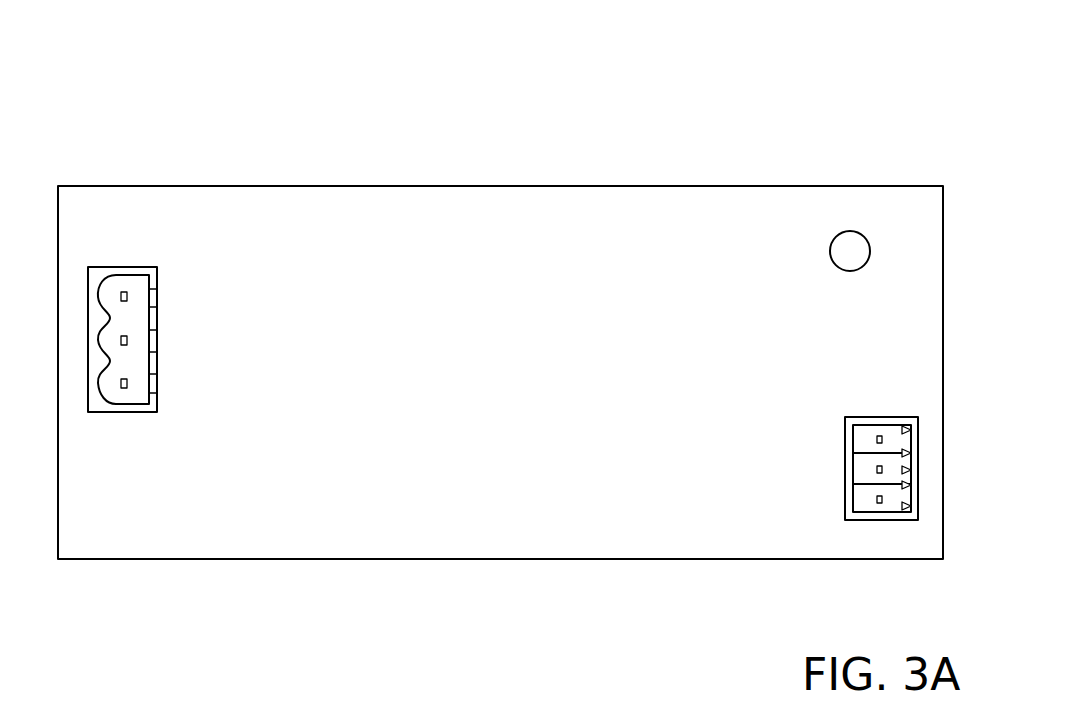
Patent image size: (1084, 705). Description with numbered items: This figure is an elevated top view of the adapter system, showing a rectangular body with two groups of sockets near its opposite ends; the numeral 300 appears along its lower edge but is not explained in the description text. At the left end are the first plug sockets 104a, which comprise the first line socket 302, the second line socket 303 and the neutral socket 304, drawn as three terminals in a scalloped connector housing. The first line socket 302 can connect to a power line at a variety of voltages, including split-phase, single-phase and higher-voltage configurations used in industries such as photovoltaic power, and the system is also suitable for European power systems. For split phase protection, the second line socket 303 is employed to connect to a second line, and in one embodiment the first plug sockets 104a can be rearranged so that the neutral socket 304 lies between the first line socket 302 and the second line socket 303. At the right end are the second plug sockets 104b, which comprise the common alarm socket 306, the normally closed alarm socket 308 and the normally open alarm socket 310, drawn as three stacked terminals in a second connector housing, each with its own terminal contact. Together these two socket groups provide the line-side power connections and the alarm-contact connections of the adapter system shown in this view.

The circuit board 300 is at (500, 445).
The first plug sockets 104a is at (90, 268).
The second plug sockets 104b is at (918, 413).
The first line socket 302 is at (124, 297).
The second line socket 303 is at (124, 340).
The neutral socket 304 is at (124, 385).
The common alarm socket 306 is at (879, 438).
The normally closed alarm socket 308 is at (879, 469).
The normally open alarm socket 310 is at (879, 499).